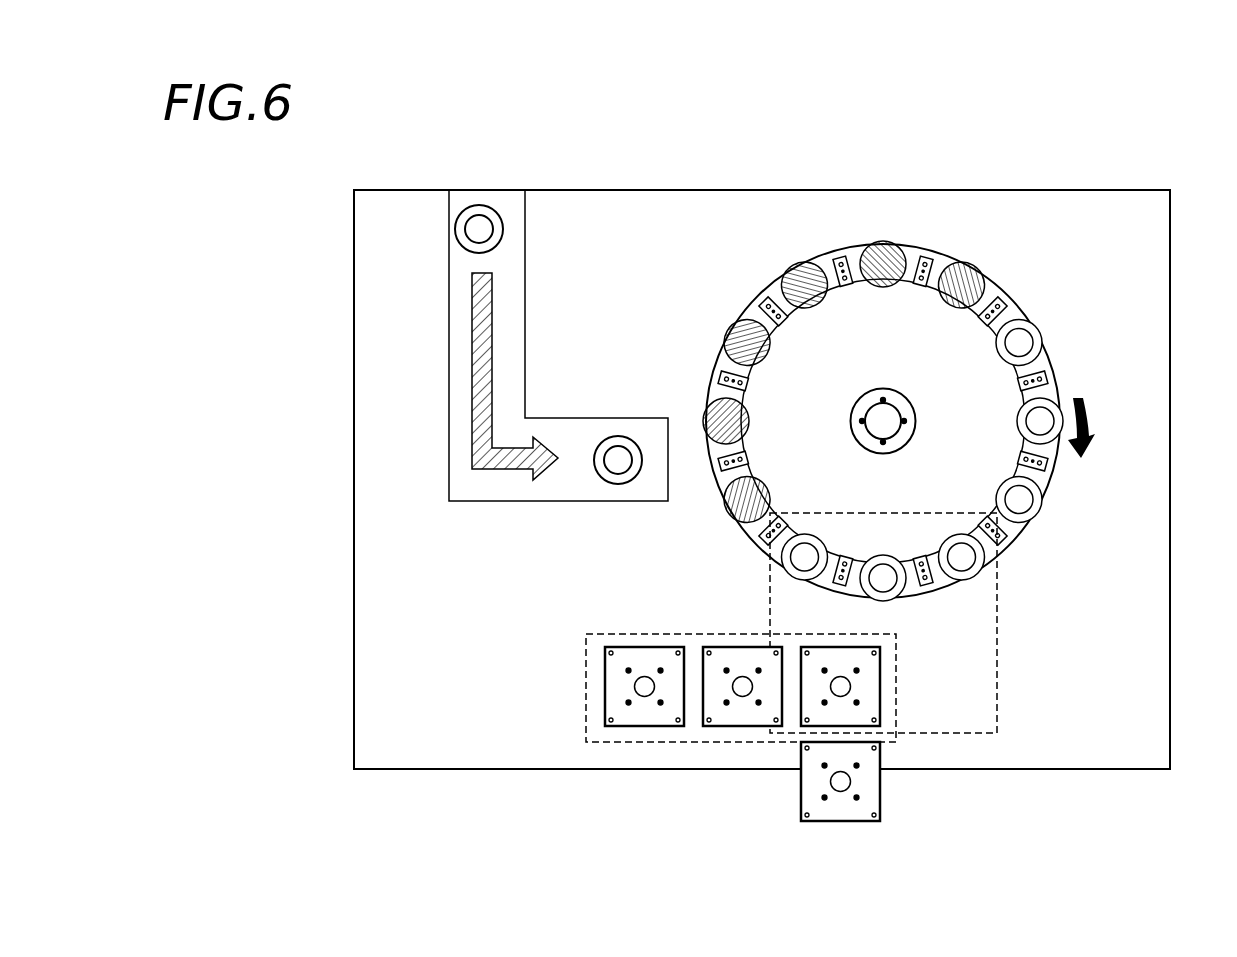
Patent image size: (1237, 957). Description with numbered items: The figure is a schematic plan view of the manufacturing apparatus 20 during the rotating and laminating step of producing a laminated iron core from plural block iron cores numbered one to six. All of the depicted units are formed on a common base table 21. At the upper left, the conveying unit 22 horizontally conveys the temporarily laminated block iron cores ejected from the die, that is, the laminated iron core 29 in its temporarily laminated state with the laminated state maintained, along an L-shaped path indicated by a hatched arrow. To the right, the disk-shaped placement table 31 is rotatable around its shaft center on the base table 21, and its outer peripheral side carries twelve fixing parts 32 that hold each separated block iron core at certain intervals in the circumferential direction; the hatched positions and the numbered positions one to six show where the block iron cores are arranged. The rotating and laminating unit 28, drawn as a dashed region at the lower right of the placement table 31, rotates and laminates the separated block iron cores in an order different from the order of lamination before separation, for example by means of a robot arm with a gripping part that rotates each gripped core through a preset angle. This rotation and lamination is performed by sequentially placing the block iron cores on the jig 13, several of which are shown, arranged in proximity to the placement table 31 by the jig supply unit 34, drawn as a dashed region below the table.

The manufacturing apparatus 20 is at (1122, 140).
The base table 21 is at (1057, 216).
The conveying unit 22 is at (447, 272).
The laminated iron core 29 is at (490, 207).
The placement table 31 is at (971, 261).
The fixing parts 32 is at (740, 330).
The rotating and laminating unit 28 is at (999, 676).
The jig supply unit 34 is at (585, 696).
The jig 13 is at (652, 718).